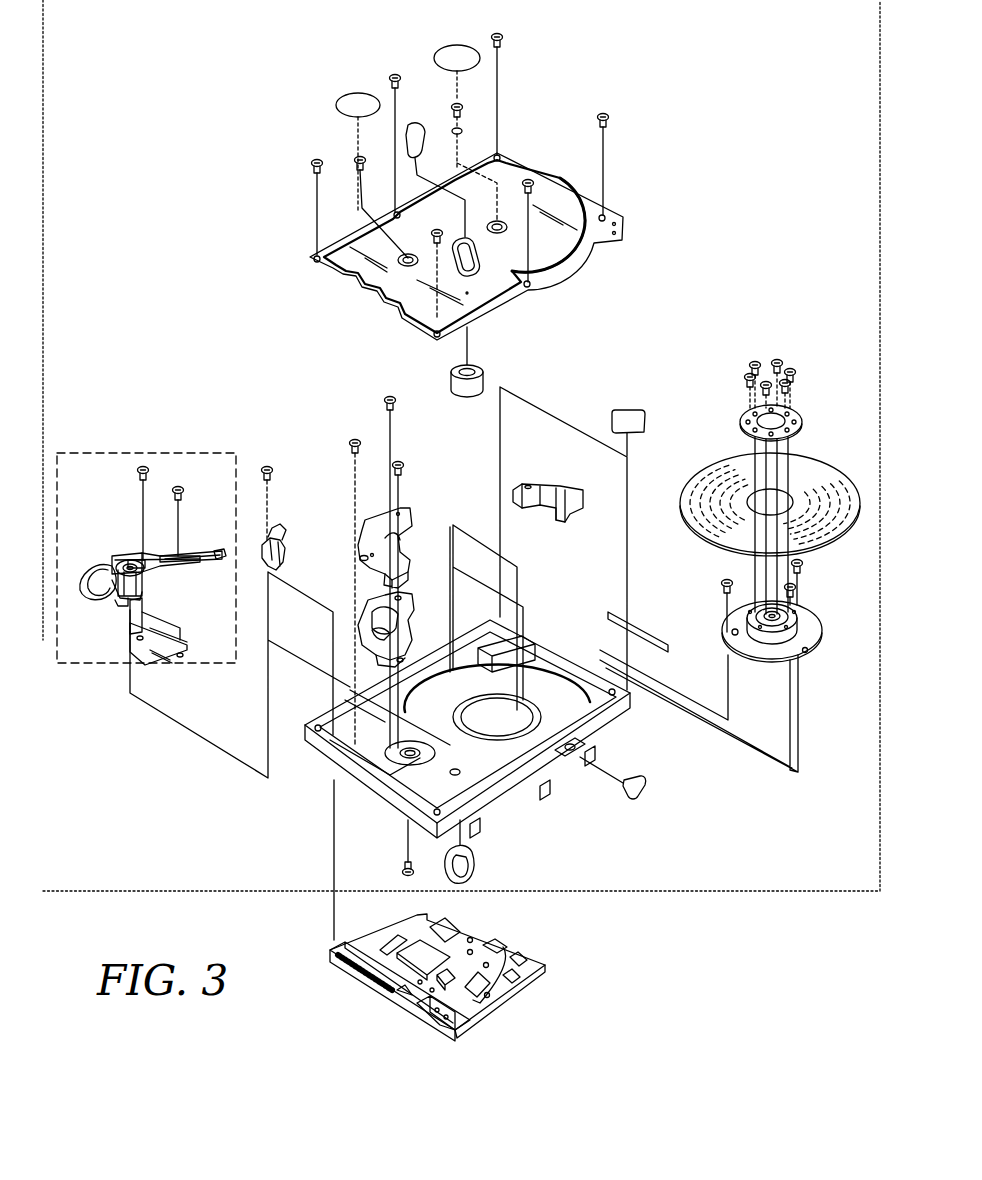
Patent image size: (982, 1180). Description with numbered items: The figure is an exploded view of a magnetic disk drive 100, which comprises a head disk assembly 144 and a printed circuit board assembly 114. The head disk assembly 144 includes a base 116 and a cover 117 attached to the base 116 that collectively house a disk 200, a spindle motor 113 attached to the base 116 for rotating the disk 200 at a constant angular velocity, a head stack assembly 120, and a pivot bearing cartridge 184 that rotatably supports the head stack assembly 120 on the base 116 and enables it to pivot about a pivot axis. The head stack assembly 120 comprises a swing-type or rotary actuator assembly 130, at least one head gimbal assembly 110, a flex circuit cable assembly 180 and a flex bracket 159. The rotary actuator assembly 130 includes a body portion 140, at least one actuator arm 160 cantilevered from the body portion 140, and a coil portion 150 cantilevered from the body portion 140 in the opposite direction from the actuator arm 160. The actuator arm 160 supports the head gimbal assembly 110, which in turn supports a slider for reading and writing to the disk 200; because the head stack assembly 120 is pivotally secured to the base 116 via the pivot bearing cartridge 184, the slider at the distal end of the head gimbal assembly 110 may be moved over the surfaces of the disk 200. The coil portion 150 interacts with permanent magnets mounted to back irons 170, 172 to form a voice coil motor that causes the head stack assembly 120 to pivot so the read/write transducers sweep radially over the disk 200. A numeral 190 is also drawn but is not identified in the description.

The magnetic disk drive 100 is at (716, 912).
The head gimbal assembly 110 is at (224, 554).
The spindle motor 113 is at (716, 608).
The printed circuit board assembly 114 is at (493, 1007).
The base 116 is at (523, 793).
The cover 117 is at (590, 250).
The head stack assembly 120 is at (108, 452).
The rotary actuator assembly 130 is at (108, 548).
The body portion 140 is at (106, 566).
The head disk assembly 144 is at (620, 892).
The coil portion 150 is at (110, 606).
The flex bracket 159 is at (210, 634).
The actuator arm 160 is at (158, 556).
The back iron 170 is at (357, 536).
The back iron 172 is at (412, 607).
The flex circuit cable assembly 180 is at (165, 578).
The pivot bearing cartridge 184 is at (130, 558).
The magnet 190 is at (372, 630).
The disk 200 is at (703, 469).